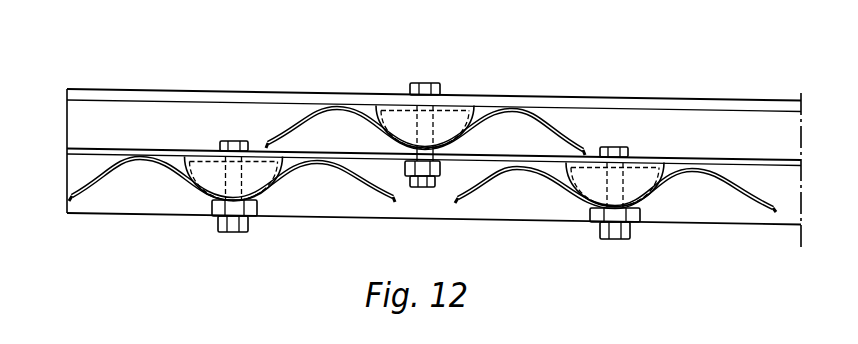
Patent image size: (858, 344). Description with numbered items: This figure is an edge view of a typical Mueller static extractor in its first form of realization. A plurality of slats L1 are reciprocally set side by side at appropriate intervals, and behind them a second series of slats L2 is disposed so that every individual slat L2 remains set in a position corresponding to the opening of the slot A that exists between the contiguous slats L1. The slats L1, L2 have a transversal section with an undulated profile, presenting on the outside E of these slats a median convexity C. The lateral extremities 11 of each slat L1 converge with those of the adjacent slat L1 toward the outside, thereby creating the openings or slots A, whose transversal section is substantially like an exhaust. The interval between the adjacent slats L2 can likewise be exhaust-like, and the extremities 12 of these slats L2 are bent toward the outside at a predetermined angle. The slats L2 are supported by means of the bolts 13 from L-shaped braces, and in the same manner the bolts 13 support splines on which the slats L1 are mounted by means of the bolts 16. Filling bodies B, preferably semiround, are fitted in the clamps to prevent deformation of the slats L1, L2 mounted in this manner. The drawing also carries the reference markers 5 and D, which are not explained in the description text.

The rail / spacer bar 5 is at (793, 160).
The lateral extremities 11 is at (77, 197).
The extremities 12 is at (268, 143).
The bolts 13 is at (427, 82).
The bolts 16 is at (220, 144).
The slot A is at (428, 205).
The filling bodies B is at (277, 173).
The median convexity C is at (260, 200).
The direction indicator D is at (300, 47).
The outside E is at (193, 190).
The slats L1 is at (166, 174).
The slats L2 is at (557, 123).